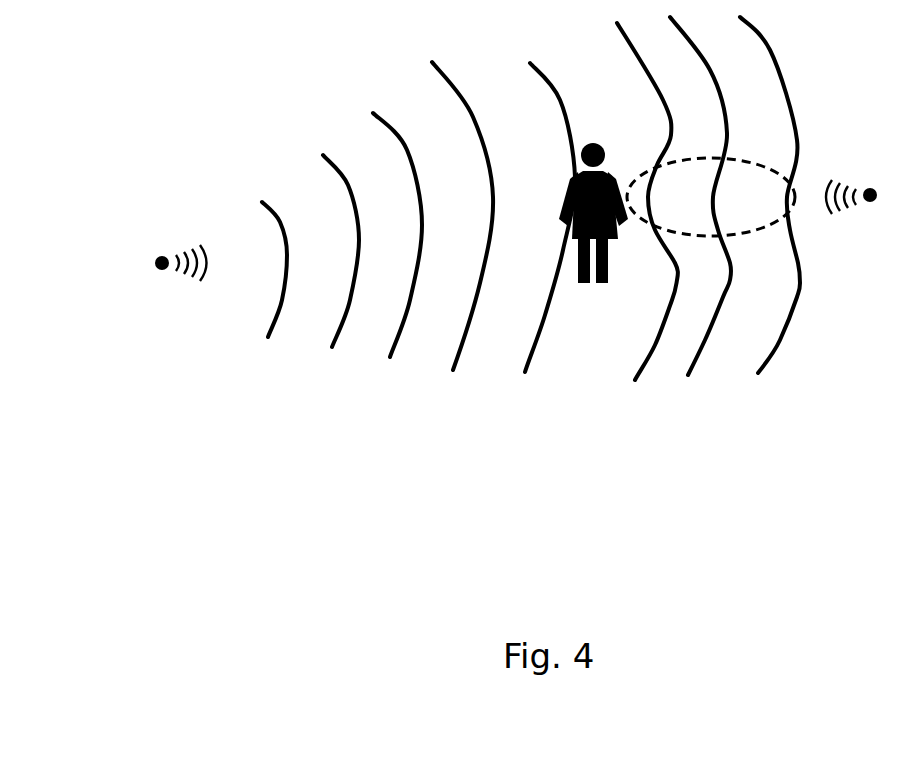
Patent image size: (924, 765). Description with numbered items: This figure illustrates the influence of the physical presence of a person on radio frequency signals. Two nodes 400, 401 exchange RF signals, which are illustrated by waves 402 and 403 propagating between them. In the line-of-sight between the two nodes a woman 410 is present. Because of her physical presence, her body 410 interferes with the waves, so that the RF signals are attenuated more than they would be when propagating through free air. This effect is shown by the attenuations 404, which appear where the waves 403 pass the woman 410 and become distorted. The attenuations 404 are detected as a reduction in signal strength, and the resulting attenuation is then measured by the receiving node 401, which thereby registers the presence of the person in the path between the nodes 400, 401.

The node 400 is at (172, 218).
The node 401 is at (860, 146).
The waves 402 is at (525, 403).
The waves 403 is at (782, 387).
The attenuations 404 is at (755, 235).
The woman 410 is at (598, 122).